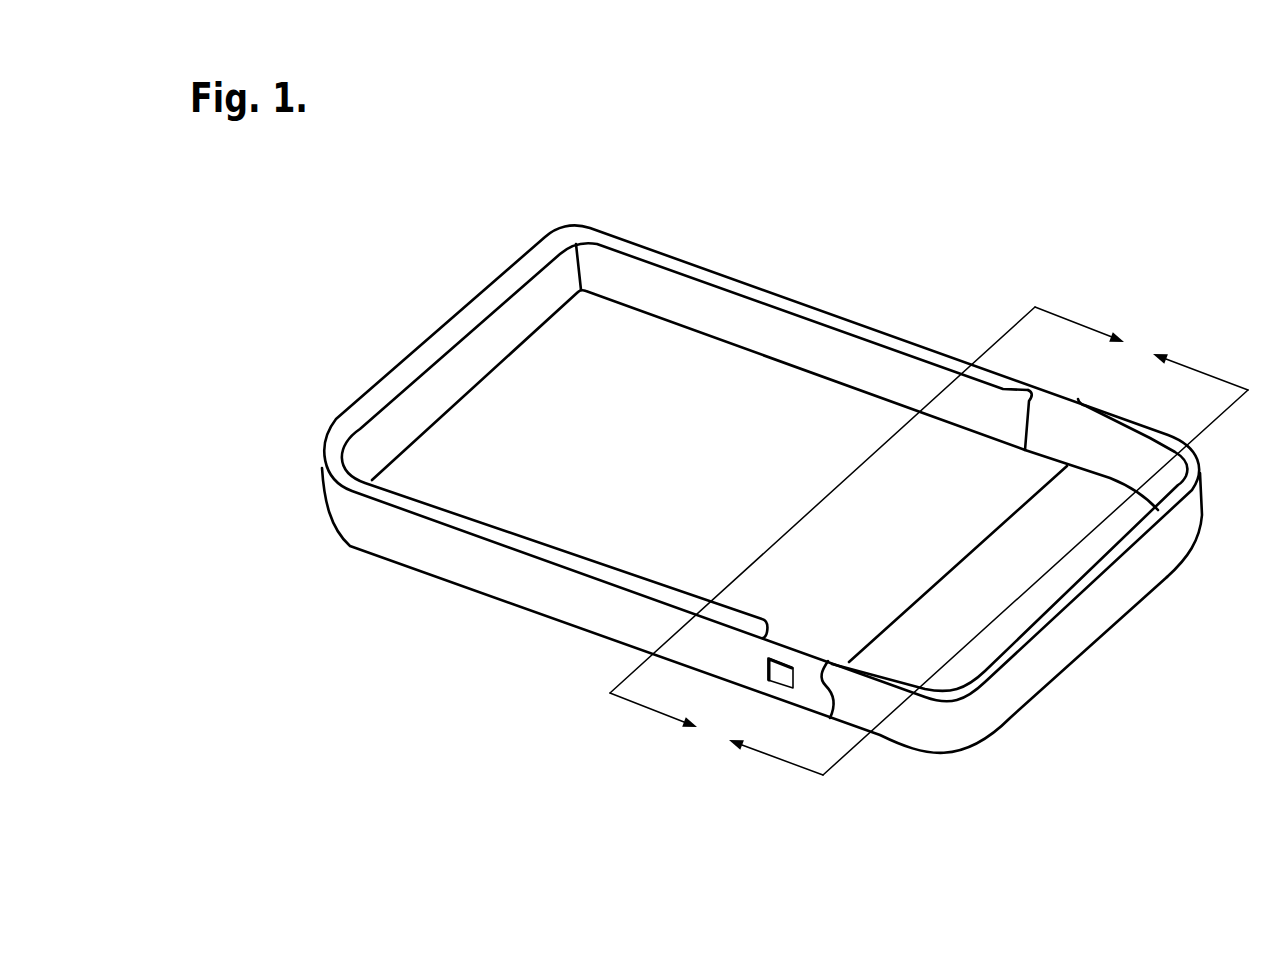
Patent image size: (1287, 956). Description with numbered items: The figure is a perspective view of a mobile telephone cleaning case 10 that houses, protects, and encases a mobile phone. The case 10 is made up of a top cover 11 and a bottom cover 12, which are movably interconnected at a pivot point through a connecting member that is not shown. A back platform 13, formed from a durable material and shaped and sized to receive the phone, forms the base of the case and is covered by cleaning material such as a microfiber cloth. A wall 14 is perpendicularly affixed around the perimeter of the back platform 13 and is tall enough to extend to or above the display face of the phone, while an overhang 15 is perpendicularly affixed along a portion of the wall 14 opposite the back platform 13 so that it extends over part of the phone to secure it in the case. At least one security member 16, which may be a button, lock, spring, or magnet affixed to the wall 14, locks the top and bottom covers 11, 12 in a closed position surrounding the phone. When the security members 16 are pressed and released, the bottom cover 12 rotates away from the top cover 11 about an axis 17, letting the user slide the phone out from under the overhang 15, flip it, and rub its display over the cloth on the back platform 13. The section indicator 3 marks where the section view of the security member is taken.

The mobile telephone cleaning case 10 is at (913, 250).
The top cover 11 is at (1040, 373).
The bottom cover 12 is at (1047, 373).
The back platform 13 is at (686, 543).
The wall 14 is at (410, 567).
The overhang 15 is at (530, 557).
The security member 16 is at (767, 662).
The axis 17 is at (900, 620).
The section line 3- 3 is at (929, 541).